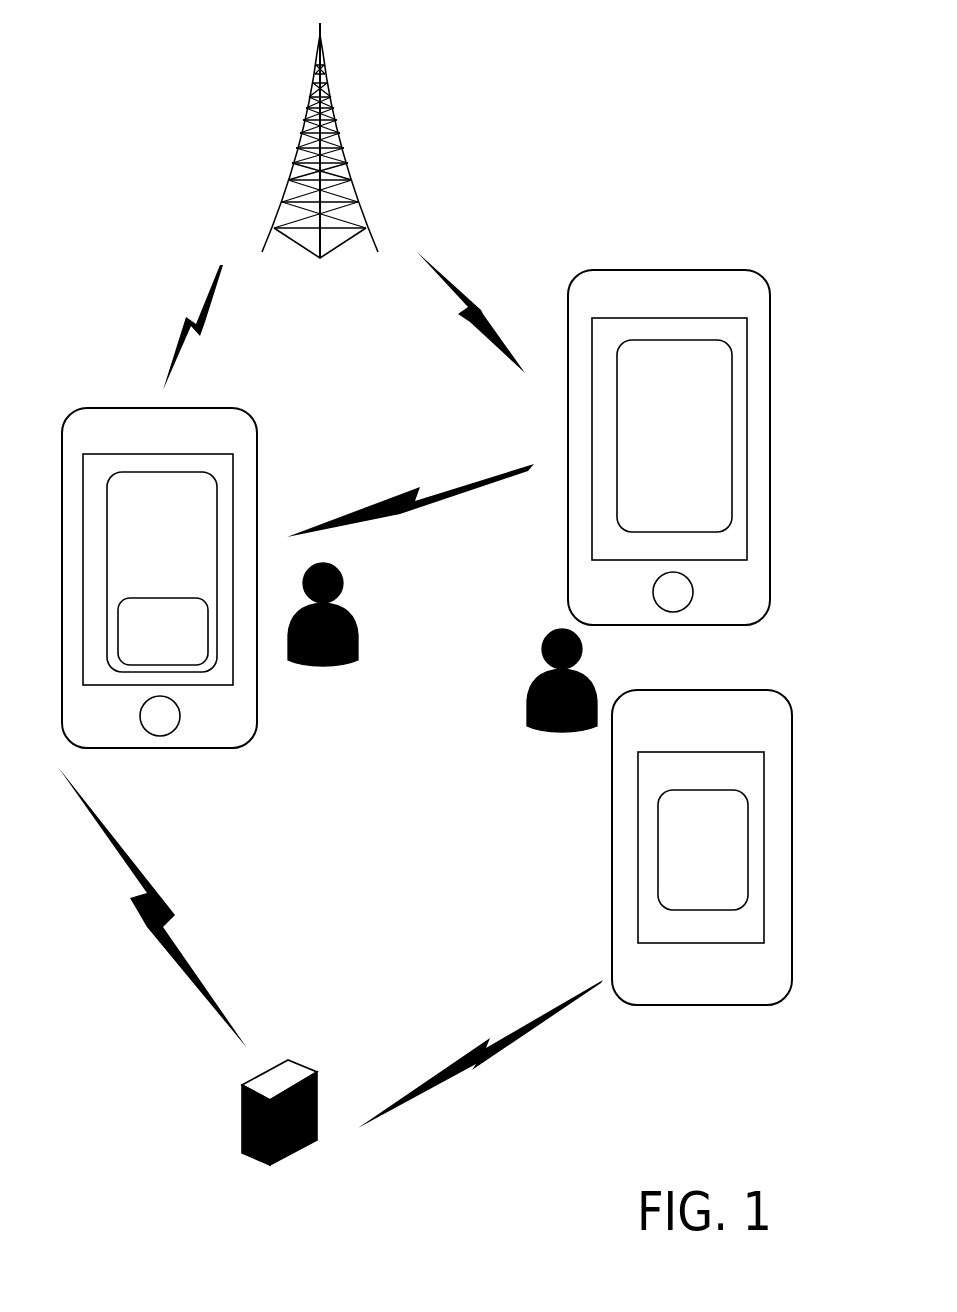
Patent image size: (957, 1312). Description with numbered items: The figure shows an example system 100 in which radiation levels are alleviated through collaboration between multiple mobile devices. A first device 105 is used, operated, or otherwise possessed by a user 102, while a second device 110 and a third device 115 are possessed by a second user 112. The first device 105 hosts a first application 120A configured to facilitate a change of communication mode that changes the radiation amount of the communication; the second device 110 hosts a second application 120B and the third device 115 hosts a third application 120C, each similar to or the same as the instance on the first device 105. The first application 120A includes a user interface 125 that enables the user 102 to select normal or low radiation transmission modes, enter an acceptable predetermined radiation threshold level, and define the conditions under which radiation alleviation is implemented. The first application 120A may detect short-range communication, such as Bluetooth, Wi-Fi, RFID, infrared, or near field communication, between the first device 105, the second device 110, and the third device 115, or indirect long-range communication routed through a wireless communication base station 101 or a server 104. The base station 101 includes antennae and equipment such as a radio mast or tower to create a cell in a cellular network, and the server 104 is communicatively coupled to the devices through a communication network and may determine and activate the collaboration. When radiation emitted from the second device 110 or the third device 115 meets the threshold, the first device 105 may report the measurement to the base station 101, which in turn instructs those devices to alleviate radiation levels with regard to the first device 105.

The system 100 is at (82, 36).
The wireless communication base station 101 is at (358, 121).
The user 102 is at (311, 604).
The server 104 is at (301, 1083).
The first device 105 is at (108, 410).
The second device 110 is at (688, 690).
The second user 112 is at (546, 666).
The third device 115 is at (678, 277).
The first application 120A is at (162, 572).
The second application 120B is at (703, 850).
The third application 120C is at (674, 436).
The user interface 125 is at (163, 631).